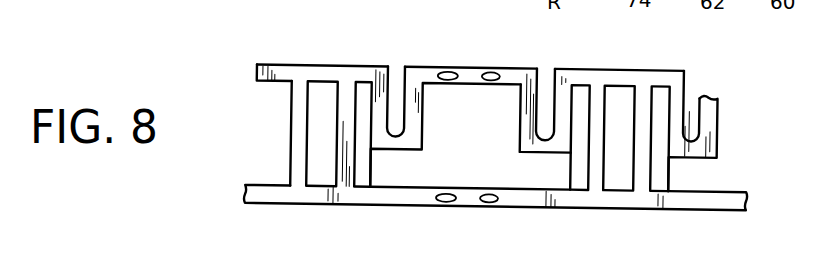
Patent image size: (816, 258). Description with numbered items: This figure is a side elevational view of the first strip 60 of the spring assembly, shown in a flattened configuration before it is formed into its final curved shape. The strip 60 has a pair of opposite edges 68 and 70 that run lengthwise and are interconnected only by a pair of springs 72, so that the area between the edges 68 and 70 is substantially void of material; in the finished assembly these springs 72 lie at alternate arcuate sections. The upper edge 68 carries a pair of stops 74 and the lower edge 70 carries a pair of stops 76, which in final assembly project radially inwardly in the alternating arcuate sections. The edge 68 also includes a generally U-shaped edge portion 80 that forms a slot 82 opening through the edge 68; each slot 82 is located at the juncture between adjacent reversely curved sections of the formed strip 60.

The strip 60 is at (272, 82).
The edge 68 is at (301, 63).
The edge 70 is at (277, 202).
The spring 72 is at (292, 150).
The stop 74 is at (451, 72).
The stop 76 is at (452, 193).
The U-shaped edge portion 80 is at (424, 134).
The slot 82 is at (398, 96).